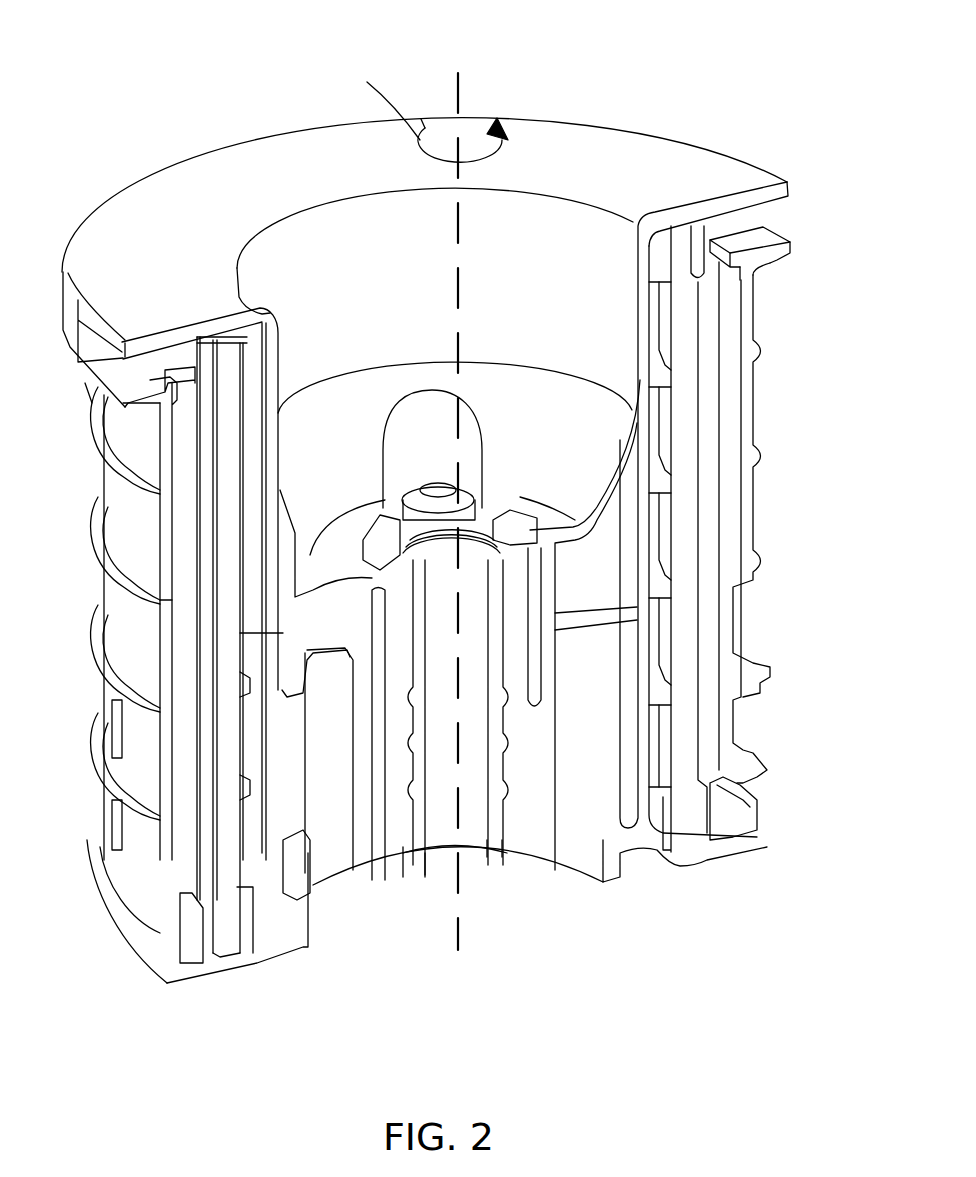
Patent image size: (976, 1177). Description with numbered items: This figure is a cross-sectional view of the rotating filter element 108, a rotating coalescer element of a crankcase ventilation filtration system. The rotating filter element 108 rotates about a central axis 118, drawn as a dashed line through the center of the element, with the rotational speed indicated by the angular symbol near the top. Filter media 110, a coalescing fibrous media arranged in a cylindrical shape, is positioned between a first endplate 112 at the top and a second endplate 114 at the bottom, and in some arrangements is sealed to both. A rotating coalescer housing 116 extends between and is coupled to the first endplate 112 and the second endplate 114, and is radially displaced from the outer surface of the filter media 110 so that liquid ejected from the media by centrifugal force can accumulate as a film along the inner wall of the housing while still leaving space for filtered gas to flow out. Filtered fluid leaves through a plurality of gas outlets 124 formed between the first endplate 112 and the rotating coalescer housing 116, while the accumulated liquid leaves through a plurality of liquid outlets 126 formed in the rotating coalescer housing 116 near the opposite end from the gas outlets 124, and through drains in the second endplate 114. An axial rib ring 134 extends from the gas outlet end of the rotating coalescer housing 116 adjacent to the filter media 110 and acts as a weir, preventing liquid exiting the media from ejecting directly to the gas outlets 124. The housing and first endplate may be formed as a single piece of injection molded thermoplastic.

The rotating filter element 108 is at (122, 42).
The filter media 110 is at (683, 716).
The first endplate 112 is at (145, 242).
The second endplate 114 is at (697, 853).
The rotating coalescer housing 116 is at (133, 523).
The central axis 118 is at (462, 93).
The gas outlets 124 is at (743, 223).
The liquid outlets 126 is at (117, 832).
The axial rib ring 134 is at (168, 370).